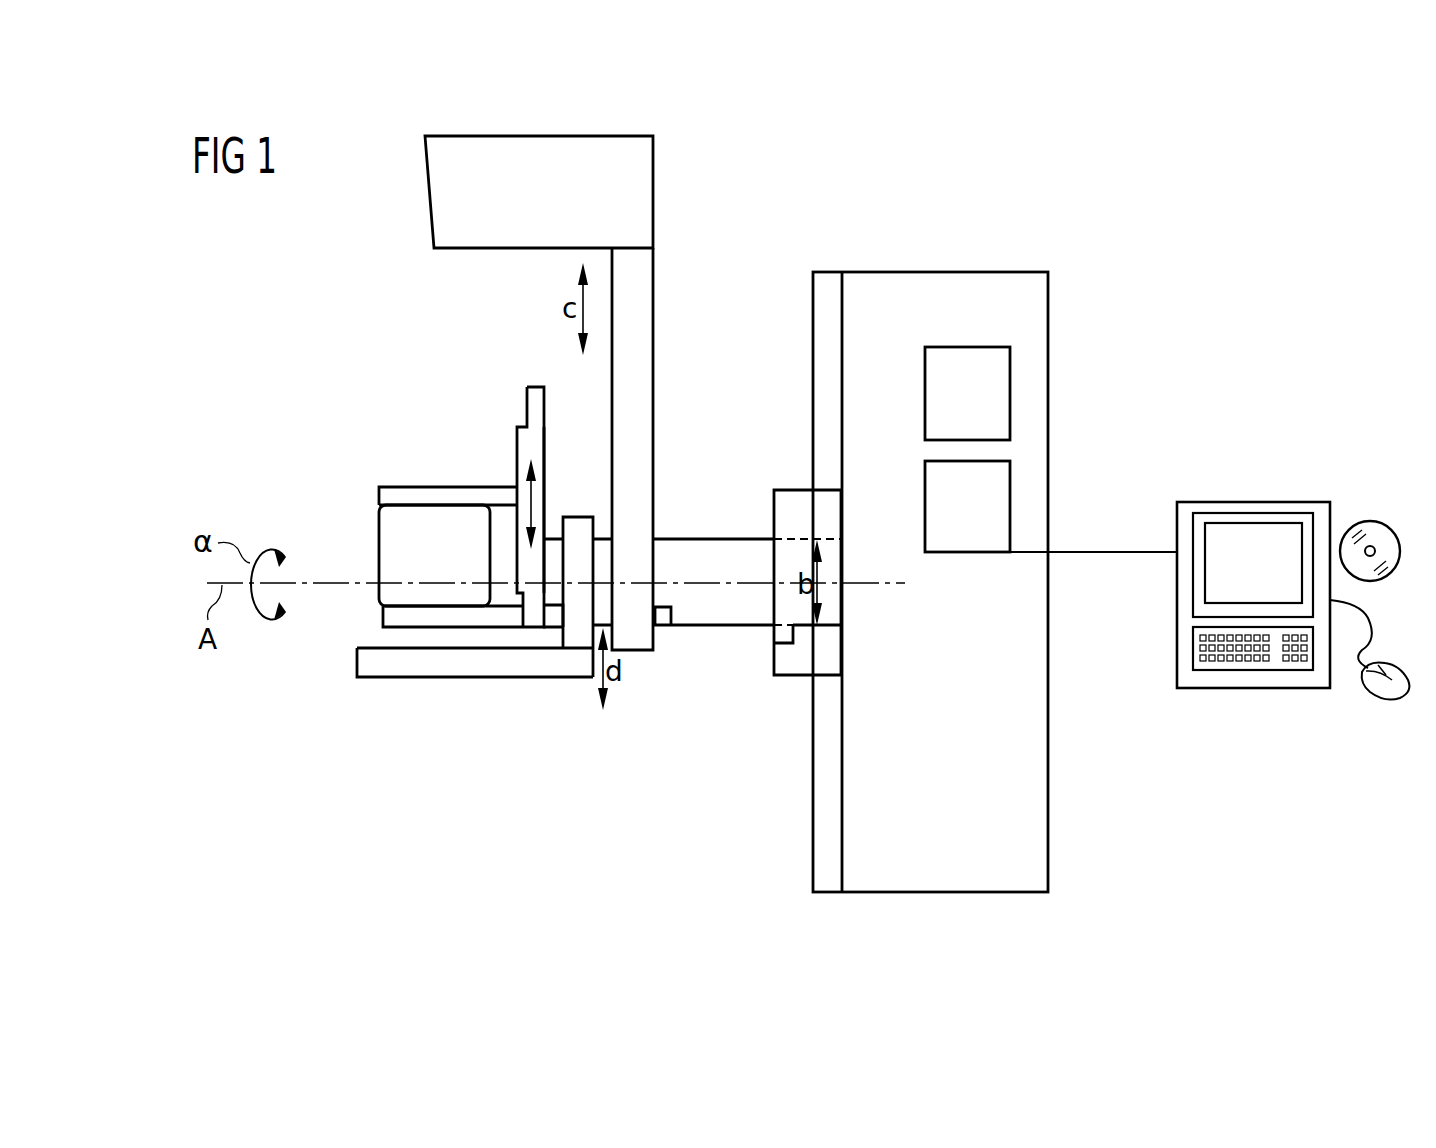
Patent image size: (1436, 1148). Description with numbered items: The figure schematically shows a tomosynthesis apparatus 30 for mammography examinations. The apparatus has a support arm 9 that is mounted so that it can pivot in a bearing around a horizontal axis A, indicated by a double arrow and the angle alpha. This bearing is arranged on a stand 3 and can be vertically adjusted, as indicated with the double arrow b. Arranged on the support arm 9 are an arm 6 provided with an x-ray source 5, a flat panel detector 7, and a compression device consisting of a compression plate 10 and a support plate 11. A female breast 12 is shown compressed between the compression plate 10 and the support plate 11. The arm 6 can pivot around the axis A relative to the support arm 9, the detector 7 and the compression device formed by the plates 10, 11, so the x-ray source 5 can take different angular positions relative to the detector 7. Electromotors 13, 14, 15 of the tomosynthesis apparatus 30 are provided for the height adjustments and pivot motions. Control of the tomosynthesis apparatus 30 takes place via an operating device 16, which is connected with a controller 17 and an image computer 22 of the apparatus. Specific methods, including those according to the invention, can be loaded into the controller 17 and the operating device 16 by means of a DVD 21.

The stand 3 is at (950, 280).
The x-ray source 5 is at (440, 193).
The arm 6 is at (646, 367).
The flat panel detector 7 is at (417, 670).
The support arm 9 is at (695, 539).
The compression plate 10 is at (417, 495).
The support plate 11 is at (390, 617).
The female breast 12 is at (386, 547).
The electromotor 13 is at (774, 633).
The electromotor 14 is at (660, 618).
The electromotor 15 is at (553, 618).
The operating device 16 is at (1338, 448).
The controller 17 is at (925, 508).
The DVD 21 is at (1370, 522).
The image computer 22 is at (925, 396).
The tomosynthesis apparatus 30 is at (1125, 220).